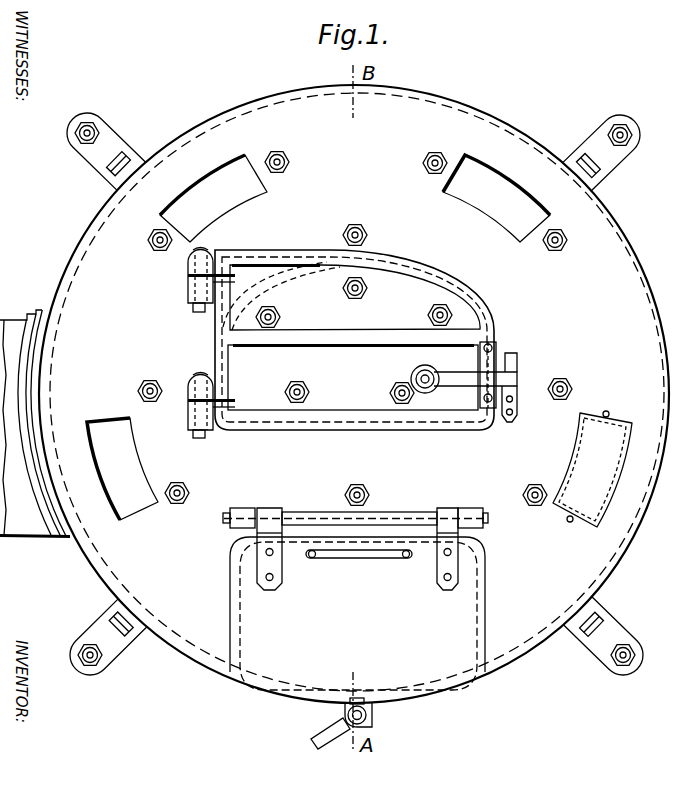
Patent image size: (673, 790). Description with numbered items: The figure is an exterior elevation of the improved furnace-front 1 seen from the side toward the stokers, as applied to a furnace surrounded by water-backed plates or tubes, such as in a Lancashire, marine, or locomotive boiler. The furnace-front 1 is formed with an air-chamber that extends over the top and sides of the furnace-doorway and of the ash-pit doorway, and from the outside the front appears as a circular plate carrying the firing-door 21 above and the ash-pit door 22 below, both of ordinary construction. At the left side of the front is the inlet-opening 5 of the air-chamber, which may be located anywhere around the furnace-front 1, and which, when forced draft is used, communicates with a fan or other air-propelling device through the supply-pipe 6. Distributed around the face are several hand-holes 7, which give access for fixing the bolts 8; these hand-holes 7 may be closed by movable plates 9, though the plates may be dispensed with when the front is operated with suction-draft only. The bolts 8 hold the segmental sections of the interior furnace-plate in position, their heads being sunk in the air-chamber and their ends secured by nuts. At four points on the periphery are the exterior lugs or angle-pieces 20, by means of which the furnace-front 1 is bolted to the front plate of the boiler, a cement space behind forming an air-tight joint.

The furnace-front 1 is at (354, 394).
The inlet-opening 5 is at (58, 493).
The supply-pipe 6 is at (35, 423).
The hand-holes 7 is at (318, 337).
The bolts 8 is at (437, 163).
The movable plates 9 is at (592, 469).
The exterior lugs or angle-pieces 20 is at (117, 140).
The firing-door 21 is at (352, 343).
The ash-pit door 22 is at (355, 628).